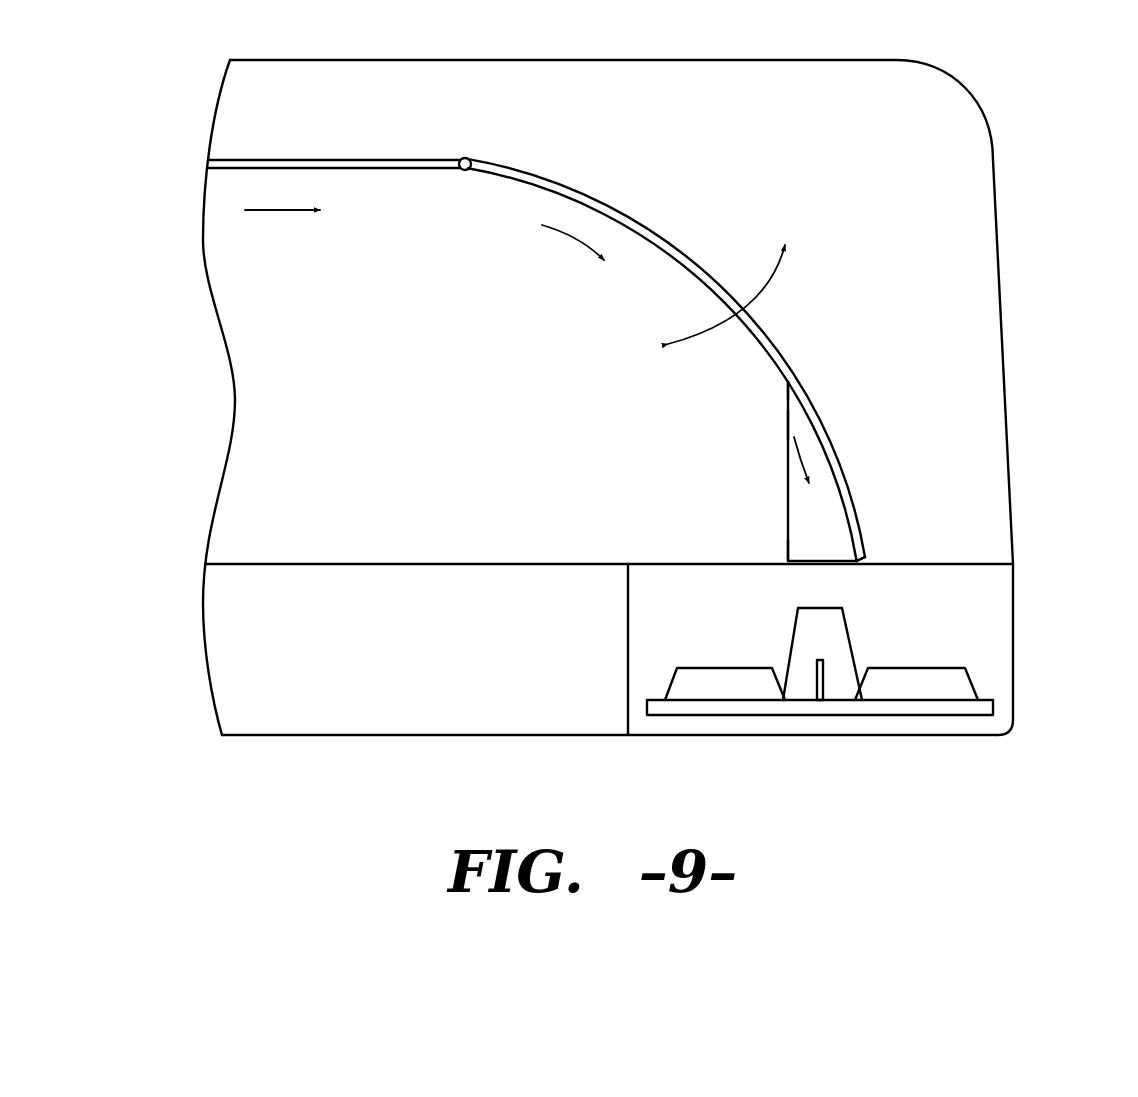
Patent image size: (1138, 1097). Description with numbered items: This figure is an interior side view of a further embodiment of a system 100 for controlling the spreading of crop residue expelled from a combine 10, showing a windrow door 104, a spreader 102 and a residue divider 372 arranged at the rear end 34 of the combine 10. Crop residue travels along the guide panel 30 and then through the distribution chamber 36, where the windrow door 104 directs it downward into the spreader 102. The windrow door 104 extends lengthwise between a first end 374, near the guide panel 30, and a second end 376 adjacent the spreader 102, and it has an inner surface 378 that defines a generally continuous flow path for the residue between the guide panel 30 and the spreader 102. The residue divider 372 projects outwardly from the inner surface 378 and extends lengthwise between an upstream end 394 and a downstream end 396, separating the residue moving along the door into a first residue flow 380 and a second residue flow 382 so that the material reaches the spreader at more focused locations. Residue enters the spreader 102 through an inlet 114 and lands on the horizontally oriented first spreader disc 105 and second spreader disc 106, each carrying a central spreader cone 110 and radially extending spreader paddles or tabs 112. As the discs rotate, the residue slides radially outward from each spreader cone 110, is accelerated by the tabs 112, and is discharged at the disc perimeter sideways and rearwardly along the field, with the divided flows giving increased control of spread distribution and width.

The combine 10 is at (1052, 118).
The guide panel 30 is at (373, 148).
The rear end 34 is at (1003, 310).
The distribution chamber 36 is at (420, 426).
The system 100 is at (882, 276).
The spreader 102 is at (1024, 632).
The windrow door 104 is at (720, 266).
The first spreader disc 105 is at (885, 743).
The second spreader disc 106 is at (942, 717).
The spreader cone 110 is at (827, 632).
The spreader paddles or tabs 112 is at (720, 685).
The inlet 114 is at (685, 560).
The residue divider 372 is at (779, 492).
The first end 374 is at (487, 160).
The second end 376 is at (872, 541).
The inner surface 378 is at (672, 262).
The first residue flow 380 is at (695, 423).
The second residue flow 382 is at (786, 432).
The upstream end 394 is at (788, 403).
The downstream end 396 is at (787, 548).